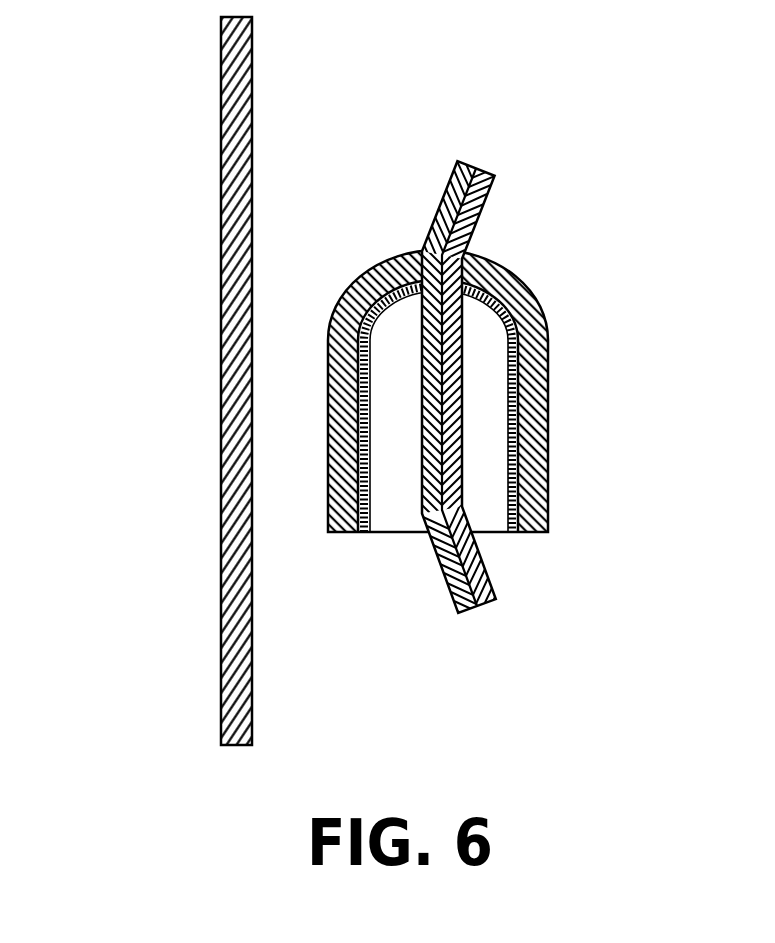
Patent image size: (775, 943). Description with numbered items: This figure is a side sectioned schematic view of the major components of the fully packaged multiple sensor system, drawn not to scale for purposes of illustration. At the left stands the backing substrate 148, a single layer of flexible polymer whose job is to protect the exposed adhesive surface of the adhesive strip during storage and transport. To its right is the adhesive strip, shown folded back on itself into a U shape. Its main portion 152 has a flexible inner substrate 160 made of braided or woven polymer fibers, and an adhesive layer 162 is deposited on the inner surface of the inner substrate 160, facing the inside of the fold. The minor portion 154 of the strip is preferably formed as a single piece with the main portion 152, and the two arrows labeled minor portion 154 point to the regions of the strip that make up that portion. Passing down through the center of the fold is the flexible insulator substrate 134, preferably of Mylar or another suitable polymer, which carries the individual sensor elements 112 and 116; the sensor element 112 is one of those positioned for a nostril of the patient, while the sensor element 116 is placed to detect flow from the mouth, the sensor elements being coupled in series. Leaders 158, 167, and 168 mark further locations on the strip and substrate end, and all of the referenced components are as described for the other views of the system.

The individual sensor element 112 is at (475, 155).
The individual sensor element 116 is at (478, 617).
The substrate 134 is at (461, 613).
The backing substrate 148 is at (230, 550).
The main portion 152 is at (585, 543).
The minor portion 154 is at (347, 140).
The corner of strap end 158 is at (488, 603).
The inner substrate 160 is at (545, 407).
The adhesive layer 162 is at (359, 533).
The right leg of clip 167 is at (490, 263).
The left leg of clip 168 is at (387, 260).